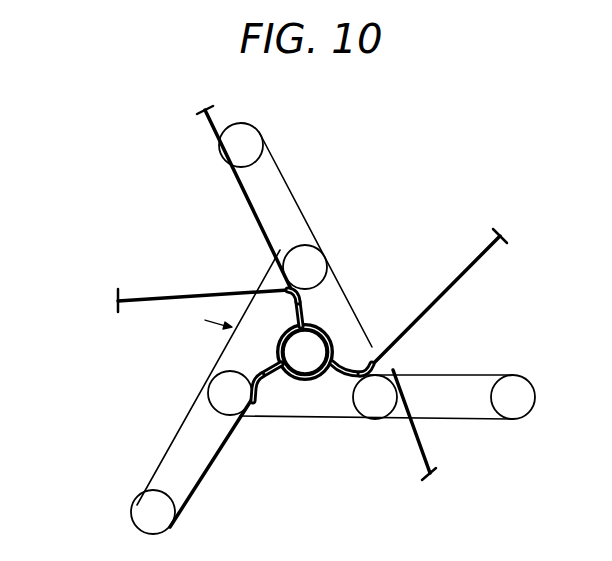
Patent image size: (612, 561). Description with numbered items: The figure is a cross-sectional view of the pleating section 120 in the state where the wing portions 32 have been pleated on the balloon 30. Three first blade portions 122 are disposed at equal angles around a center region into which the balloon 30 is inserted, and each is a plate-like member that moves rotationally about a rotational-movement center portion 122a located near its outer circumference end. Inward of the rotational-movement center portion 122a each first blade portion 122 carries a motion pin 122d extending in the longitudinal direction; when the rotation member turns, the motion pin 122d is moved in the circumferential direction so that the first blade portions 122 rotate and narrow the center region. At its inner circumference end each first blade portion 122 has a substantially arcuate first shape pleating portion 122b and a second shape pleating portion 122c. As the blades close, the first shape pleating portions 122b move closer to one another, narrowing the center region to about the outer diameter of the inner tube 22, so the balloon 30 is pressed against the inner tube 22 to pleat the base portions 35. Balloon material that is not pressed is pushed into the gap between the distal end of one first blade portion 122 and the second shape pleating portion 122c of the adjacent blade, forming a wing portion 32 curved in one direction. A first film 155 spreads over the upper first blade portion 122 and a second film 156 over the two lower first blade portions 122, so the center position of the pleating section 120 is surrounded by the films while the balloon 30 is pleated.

The pleating section 120 is at (163, 158).
The first blade portion 122 is at (281, 172).
The rotational-movement center portion 122a is at (244, 128).
The first shape pleating portion 122b is at (270, 298).
The second shape pleating portion 122c is at (296, 324).
The motion pin 122d is at (318, 258).
The first film 155 is at (460, 272).
The second film 156 is at (121, 289).
The balloon 30 is at (334, 351).
The wing portion 32 is at (308, 297).
The base portion 35 is at (334, 336).
The inner tube 22 is at (302, 372).